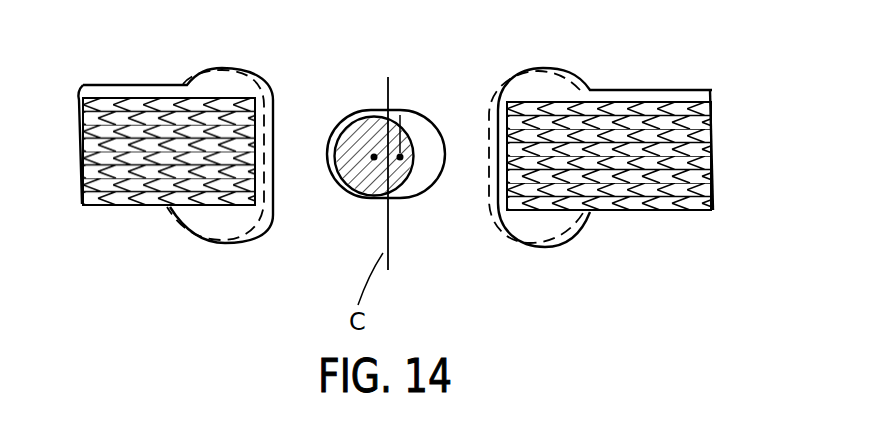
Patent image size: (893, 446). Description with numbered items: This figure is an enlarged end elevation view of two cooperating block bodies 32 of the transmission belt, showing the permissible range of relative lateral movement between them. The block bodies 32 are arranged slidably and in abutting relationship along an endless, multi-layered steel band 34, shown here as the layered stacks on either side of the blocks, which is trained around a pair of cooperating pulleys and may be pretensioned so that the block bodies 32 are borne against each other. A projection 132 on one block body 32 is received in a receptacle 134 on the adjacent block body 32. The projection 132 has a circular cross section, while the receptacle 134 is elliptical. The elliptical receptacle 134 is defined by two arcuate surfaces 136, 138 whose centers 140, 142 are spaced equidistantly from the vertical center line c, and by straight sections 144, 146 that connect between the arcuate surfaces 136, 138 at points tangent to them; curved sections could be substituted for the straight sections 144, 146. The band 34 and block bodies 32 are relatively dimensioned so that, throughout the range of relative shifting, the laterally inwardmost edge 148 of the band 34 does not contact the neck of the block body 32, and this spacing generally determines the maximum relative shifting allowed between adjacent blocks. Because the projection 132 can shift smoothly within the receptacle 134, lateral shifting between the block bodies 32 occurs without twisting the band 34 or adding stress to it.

The block body 32 is at (650, 67).
The multi-layered steel band 34 is at (708, 147).
The projection 132 is at (355, 135).
The receptacle 134 is at (424, 198).
The arcuate surface 136 is at (330, 134).
The arcuate surface 138 is at (447, 142).
The center 140 is at (345, 198).
The second wire 142 is at (399, 199).
The straight section 144 is at (367, 199).
The straight section 146 is at (400, 115).
The laterally inwardmost edge of the band 148 is at (507, 162).